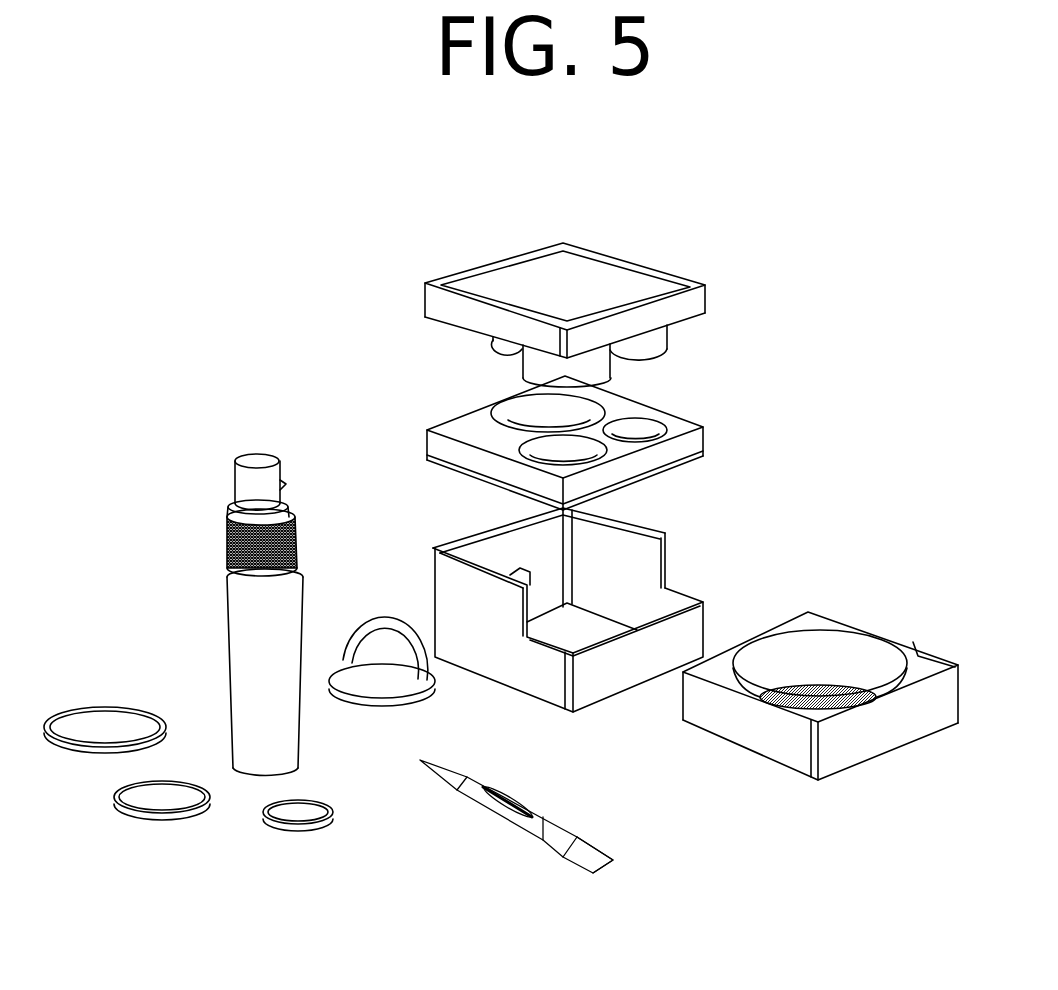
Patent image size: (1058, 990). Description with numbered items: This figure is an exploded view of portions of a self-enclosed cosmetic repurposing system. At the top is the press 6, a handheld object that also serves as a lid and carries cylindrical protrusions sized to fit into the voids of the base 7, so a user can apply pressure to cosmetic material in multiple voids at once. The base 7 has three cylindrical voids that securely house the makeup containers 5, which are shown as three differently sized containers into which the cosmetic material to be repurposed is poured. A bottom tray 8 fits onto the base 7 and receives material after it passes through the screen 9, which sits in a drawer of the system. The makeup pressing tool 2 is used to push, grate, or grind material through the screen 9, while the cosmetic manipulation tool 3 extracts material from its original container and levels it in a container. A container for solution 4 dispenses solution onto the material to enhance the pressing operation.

The makeup pressing tool 2 is at (375, 714).
The cosmetic manipulation tool 3 is at (497, 823).
The solution 4 is at (222, 578).
The makeup containers 5 is at (82, 767).
The press 6 is at (667, 265).
The base 7 is at (710, 432).
The bottom tray 8 is at (672, 558).
The screen 9 is at (822, 698).